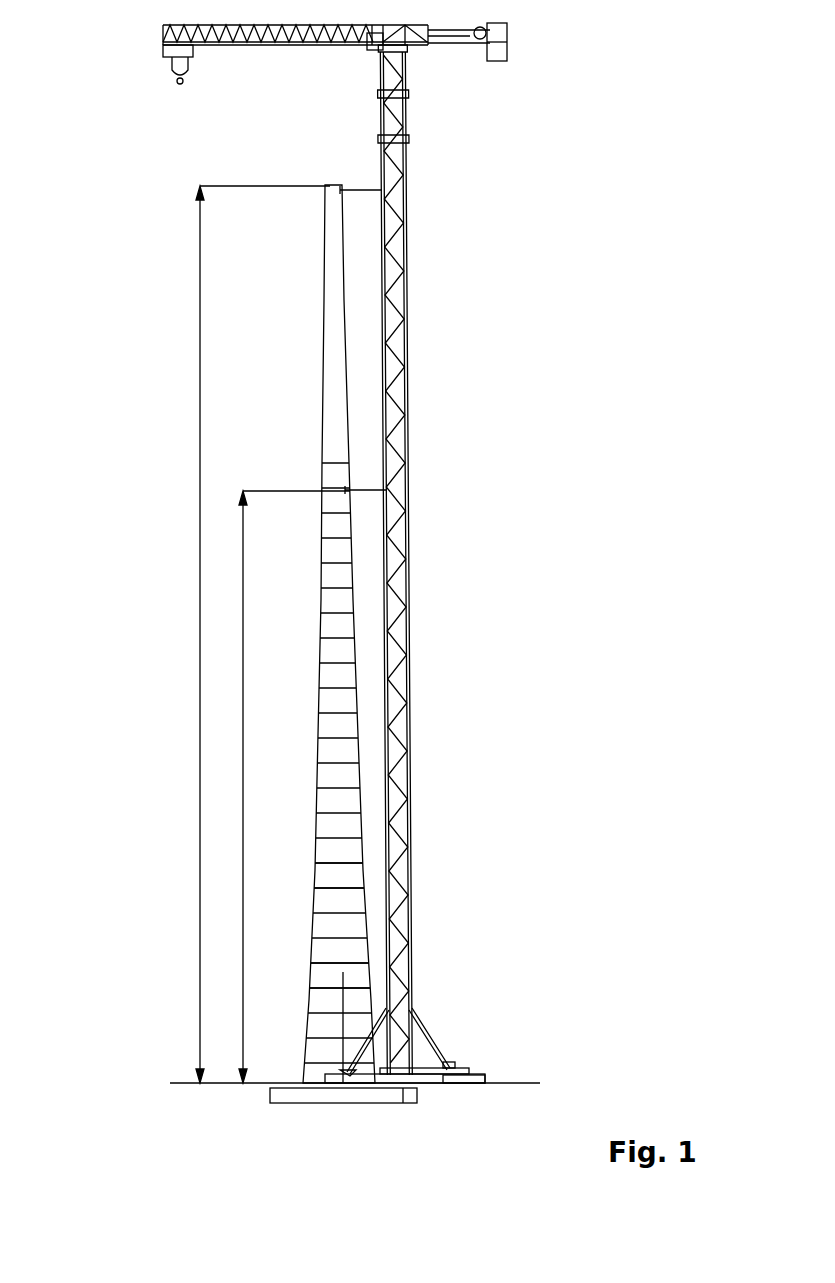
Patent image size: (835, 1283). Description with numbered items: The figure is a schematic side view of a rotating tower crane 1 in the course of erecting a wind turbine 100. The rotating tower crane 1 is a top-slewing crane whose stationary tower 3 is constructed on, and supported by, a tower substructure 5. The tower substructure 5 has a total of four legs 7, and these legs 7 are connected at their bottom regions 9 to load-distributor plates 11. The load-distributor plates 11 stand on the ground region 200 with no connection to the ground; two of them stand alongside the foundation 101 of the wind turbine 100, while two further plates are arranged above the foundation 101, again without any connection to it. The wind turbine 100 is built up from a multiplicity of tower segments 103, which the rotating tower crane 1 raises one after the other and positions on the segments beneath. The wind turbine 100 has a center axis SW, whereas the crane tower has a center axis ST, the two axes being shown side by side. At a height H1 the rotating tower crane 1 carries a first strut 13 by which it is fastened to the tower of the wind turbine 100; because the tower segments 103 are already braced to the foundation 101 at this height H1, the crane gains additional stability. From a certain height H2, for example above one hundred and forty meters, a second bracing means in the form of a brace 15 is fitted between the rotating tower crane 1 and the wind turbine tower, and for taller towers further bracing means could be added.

The rotating tower crane 1 is at (118, 106).
The stationary tower 3 is at (410, 640).
The tower substructure 5 is at (546, 1012).
The legs 7 is at (310, 1037).
The bottom regions 9 is at (453, 1059).
The load-distributor plate 11 is at (475, 1084).
The first strut 13 is at (396, 490).
The brace 15 is at (365, 190).
The wind turbine 100 is at (305, 172).
The foundation 101 is at (286, 1097).
The tower segments 103 is at (326, 921).
The ground region 200 is at (179, 1087).
The height H1 is at (294, 787).
The height H2 is at (263, 634).
The center axis of the wind turbine SW is at (322, 1000).
The center axis of the tower ST is at (404, 1108).